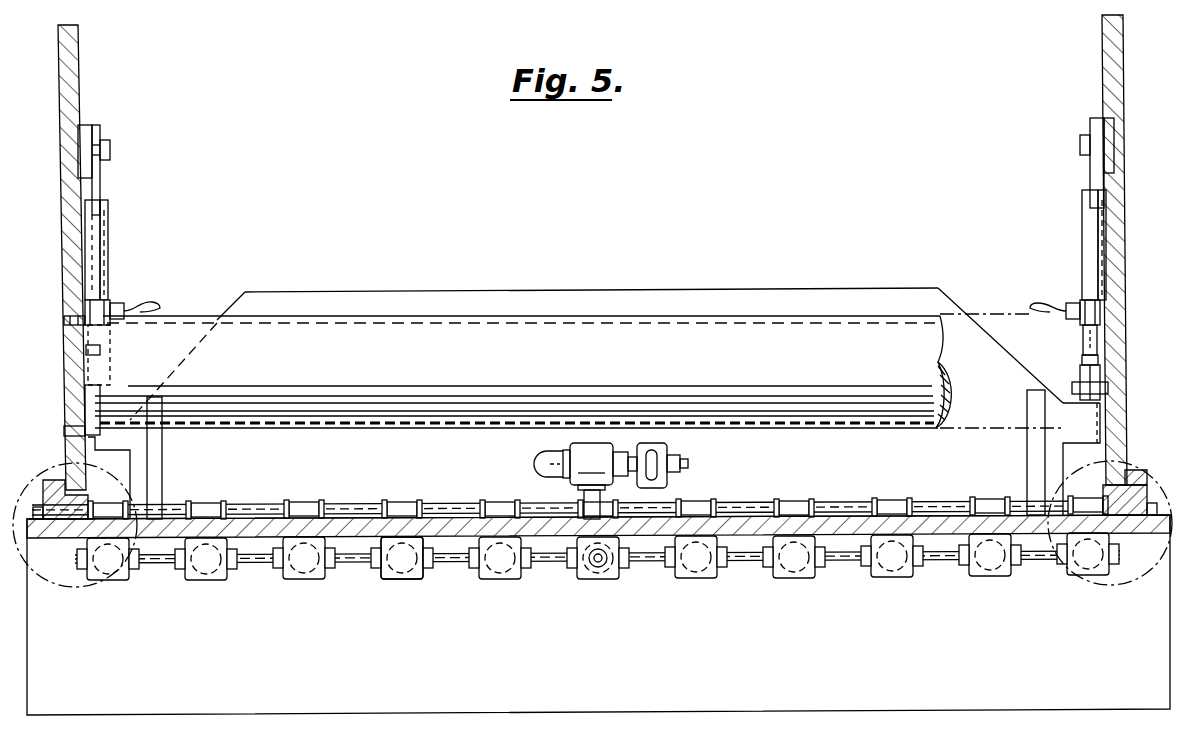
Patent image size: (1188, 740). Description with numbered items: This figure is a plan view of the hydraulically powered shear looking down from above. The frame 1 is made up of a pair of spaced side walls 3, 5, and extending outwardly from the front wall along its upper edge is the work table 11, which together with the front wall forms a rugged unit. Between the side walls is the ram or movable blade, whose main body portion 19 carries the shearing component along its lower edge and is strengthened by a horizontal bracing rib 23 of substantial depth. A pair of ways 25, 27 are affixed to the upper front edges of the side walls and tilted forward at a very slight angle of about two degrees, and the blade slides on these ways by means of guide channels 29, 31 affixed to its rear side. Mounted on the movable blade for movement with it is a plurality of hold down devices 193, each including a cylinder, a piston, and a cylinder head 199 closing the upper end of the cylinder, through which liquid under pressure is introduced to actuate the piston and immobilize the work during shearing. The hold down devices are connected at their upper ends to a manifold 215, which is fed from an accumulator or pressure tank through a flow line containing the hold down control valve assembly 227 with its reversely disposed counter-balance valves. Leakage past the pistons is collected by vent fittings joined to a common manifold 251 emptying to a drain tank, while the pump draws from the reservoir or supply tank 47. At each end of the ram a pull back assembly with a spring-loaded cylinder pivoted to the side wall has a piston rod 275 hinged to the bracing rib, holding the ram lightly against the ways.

The frame 1 is at (54, 314).
The side wall 3 is at (62, 232).
The side wall 5 is at (1127, 220).
The work table 11 is at (378, 700).
The main body portion 19 is at (828, 538).
The horizontal bracing rib 23 is at (762, 296).
The way 25 is at (130, 487).
The way 27 is at (1102, 488).
The guide channel 29 is at (46, 482).
The guide channel 31 is at (1150, 486).
The reservoir or supply tank 47 is at (383, 340).
The hold down devices 193 is at (318, 600).
The cylinder head 199 is at (418, 576).
The manifold 215 is at (743, 560).
The hold down control valve assembly 227 is at (611, 481).
The common manifold 251 is at (830, 504).
The piston rod 275 is at (1080, 337).